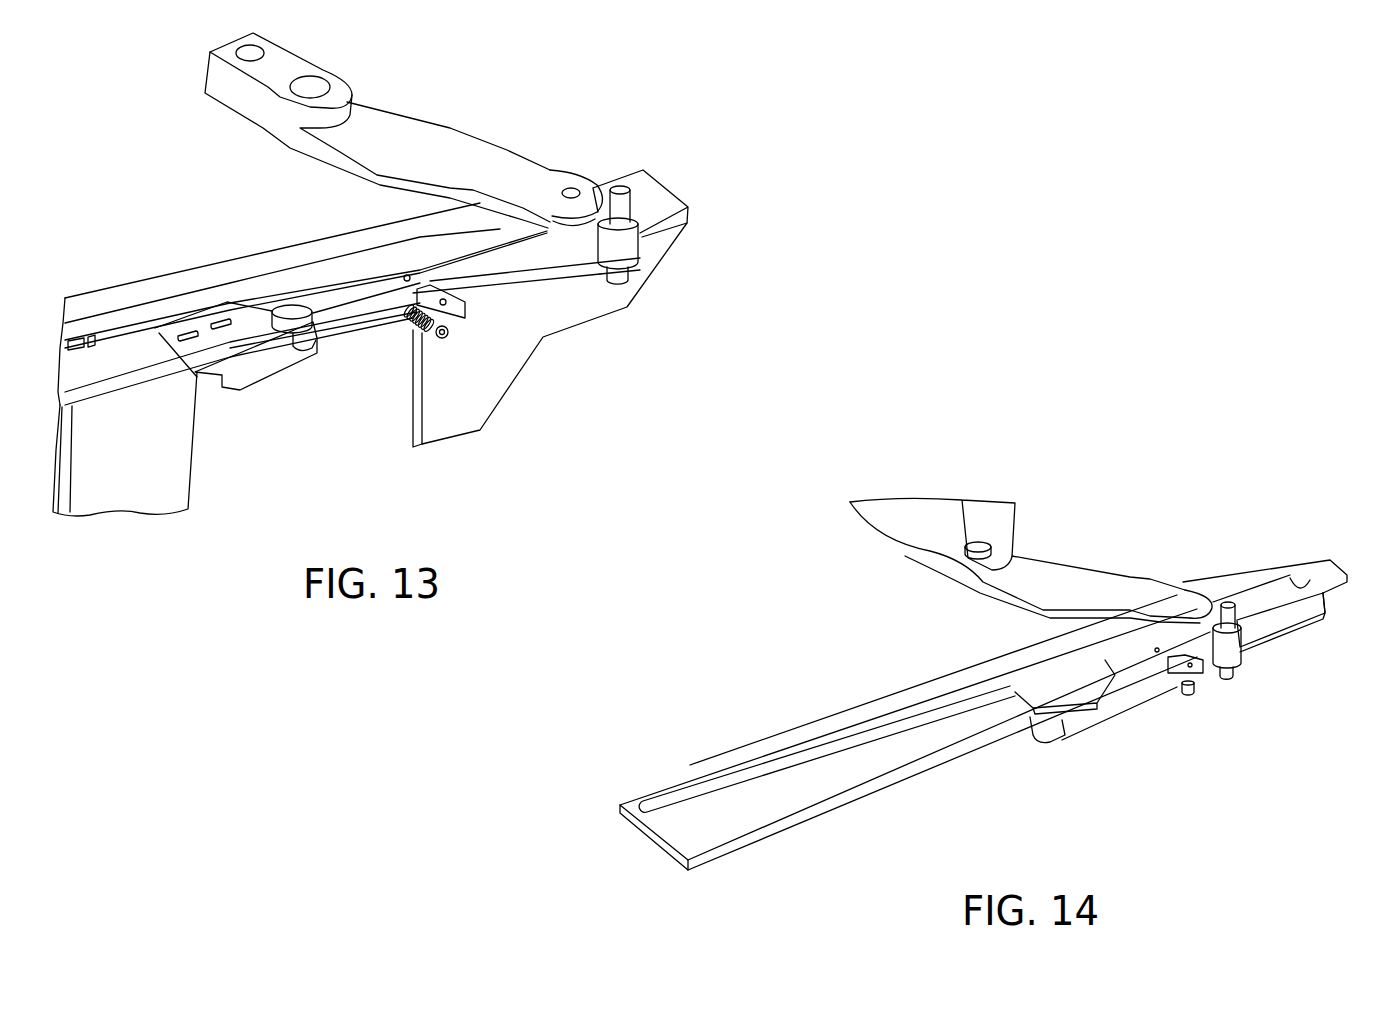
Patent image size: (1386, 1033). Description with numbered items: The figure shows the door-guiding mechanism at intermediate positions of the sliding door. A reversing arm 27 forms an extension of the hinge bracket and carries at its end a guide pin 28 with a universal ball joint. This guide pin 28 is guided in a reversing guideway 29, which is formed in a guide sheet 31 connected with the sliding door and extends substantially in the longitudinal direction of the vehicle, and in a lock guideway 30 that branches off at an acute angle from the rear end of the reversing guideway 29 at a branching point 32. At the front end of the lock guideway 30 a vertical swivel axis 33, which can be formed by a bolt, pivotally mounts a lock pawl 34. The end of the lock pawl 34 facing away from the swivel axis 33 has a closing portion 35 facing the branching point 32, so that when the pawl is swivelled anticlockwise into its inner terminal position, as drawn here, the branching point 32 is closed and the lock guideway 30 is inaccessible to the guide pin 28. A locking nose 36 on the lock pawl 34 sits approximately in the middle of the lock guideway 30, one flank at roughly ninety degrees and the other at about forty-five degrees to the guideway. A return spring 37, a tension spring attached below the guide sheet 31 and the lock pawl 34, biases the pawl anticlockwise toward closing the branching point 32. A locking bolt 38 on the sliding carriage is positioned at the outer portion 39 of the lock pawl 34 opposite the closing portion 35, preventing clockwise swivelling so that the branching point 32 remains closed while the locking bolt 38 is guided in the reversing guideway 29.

In FIG. 13, the reversing arm 27 is at (395, 132).
In FIG. 14, the reversing arm 27 is at (1055, 577).
In FIG. 13, the guide pin 28 is at (553, 220).
In FIG. 14, the guide pin 28 is at (1175, 628).
In FIG. 13, the reversing guideway 29 is at (333, 283).
In FIG. 14, the reversing guideway 29 is at (902, 720).
In FIG. 13, the lock guideway 30 is at (490, 273).
In FIG. 14, the lock guideway 30 is at (1200, 657).
In FIG. 13, the guide sheet 31 is at (643, 185).
In FIG. 14, the guide sheet 31 is at (1235, 583).
In FIG. 14, the branching point 32 is at (1283, 597).
In FIG. 13, the swivel axis 33 is at (288, 383).
In FIG. 13, the lock pawl 34 is at (558, 263).
In FIG. 14, the lock pawl 34 is at (1267, 628).
In FIG. 14, the closing portion 35 is at (1297, 590).
In FIG. 13, the locking nose 36 is at (427, 293).
In FIG. 14, the locking nose 36 is at (1178, 667).
In FIG. 13, the return spring 37 is at (413, 333).
In FIG. 14, the return spring 37 is at (1188, 697).
In FIG. 13, the locking bolt 38 is at (628, 252).
In FIG. 14, the locking bolt 38 is at (1237, 652).
In FIG. 13, the outer portion 39 is at (597, 270).
In FIG. 14, the outer portion 39 is at (1315, 623).